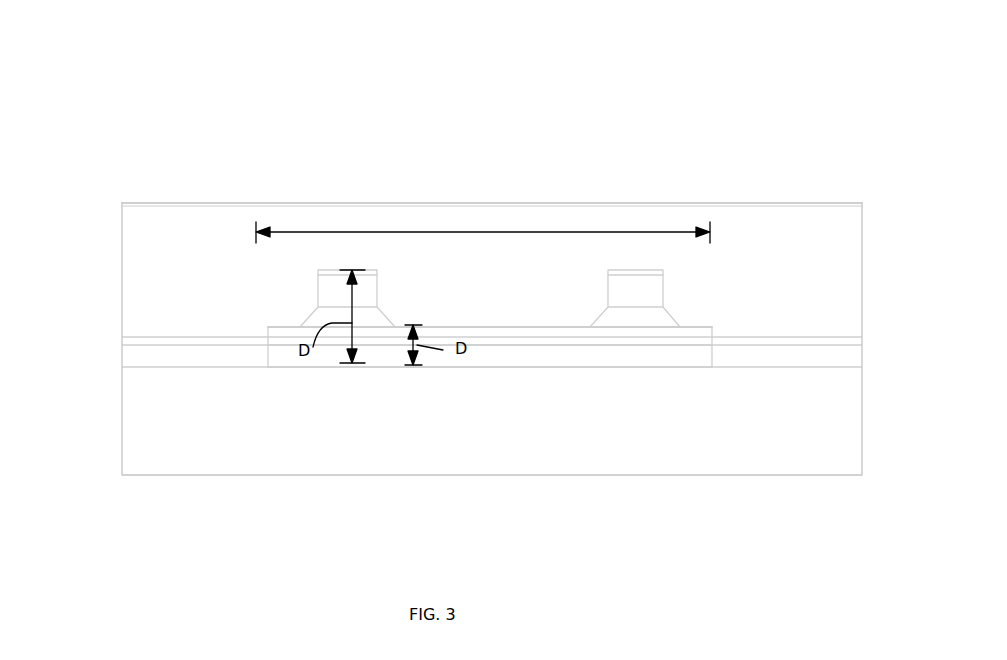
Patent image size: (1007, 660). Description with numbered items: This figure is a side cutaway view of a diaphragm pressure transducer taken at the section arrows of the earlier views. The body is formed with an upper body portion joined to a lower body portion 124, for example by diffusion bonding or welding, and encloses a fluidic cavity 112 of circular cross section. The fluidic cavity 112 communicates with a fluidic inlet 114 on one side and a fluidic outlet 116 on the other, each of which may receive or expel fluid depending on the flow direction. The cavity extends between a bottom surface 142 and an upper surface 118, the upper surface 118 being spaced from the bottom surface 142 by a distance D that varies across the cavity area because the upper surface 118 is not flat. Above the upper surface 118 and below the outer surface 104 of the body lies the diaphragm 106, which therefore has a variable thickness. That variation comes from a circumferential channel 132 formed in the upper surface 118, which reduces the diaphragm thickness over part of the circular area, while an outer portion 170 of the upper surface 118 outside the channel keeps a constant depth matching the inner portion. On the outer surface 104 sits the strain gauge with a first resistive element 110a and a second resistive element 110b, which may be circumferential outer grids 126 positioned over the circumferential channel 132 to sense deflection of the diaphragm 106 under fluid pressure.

The outer surface 104 is at (492, 144).
The diaphragm 106 is at (492, 192).
The first resistive element 110a is at (701, 138).
The second resistive element 110b is at (579, 131).
The fluidic cavity 112 is at (550, 348).
The fluidic inlet 114 is at (130, 355).
The fluidic outlet 116 is at (847, 360).
The upper surface 118 is at (490, 174).
The lower body portion 124 is at (143, 425).
The outer grids 126 is at (145, 268).
The circumferential channel 132 is at (564, 205).
The bottom surface 142 is at (457, 372).
The outer portion 170 is at (422, 234).